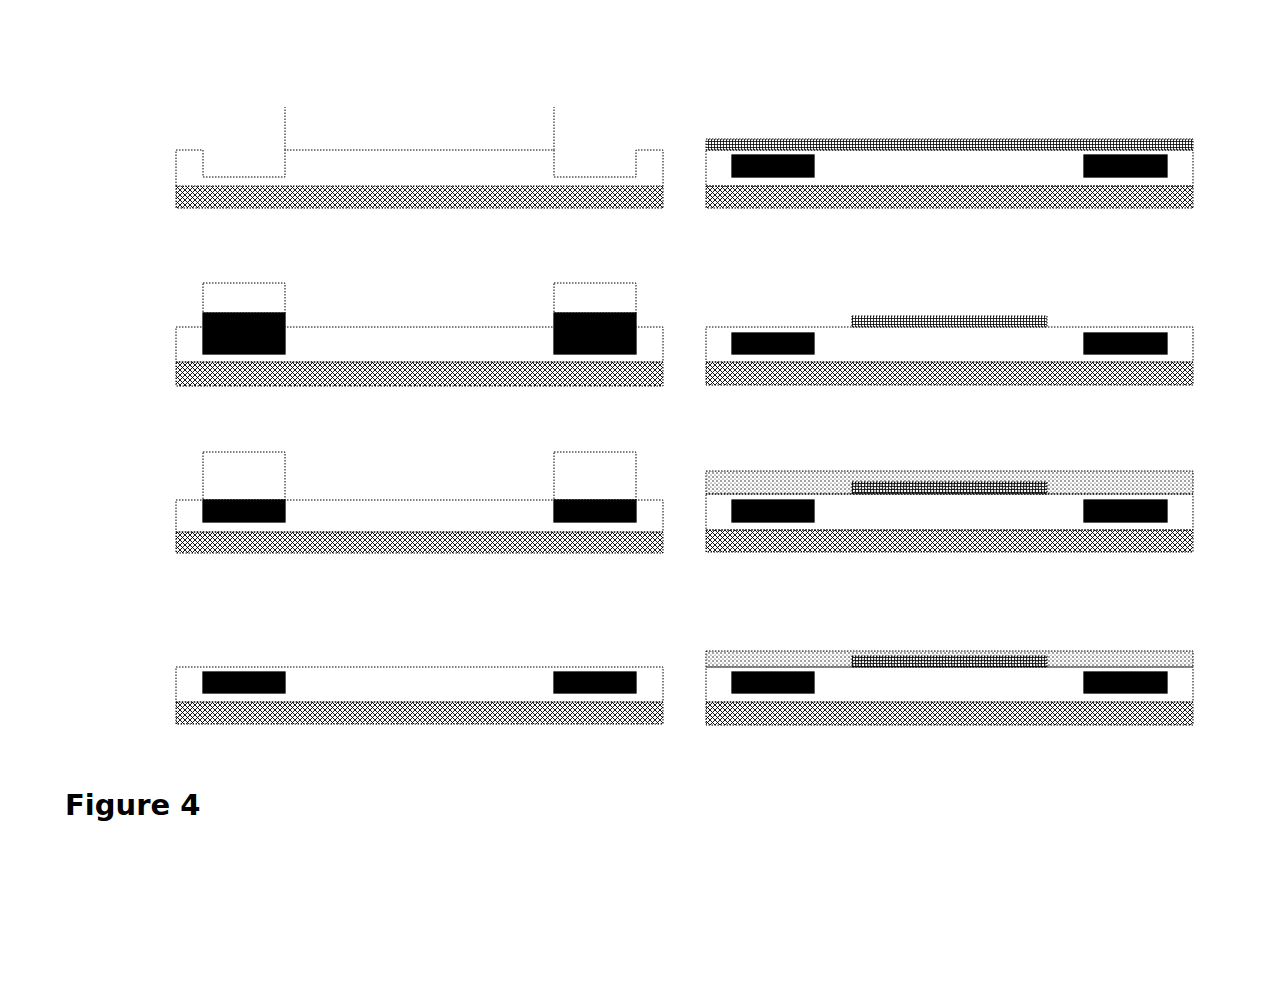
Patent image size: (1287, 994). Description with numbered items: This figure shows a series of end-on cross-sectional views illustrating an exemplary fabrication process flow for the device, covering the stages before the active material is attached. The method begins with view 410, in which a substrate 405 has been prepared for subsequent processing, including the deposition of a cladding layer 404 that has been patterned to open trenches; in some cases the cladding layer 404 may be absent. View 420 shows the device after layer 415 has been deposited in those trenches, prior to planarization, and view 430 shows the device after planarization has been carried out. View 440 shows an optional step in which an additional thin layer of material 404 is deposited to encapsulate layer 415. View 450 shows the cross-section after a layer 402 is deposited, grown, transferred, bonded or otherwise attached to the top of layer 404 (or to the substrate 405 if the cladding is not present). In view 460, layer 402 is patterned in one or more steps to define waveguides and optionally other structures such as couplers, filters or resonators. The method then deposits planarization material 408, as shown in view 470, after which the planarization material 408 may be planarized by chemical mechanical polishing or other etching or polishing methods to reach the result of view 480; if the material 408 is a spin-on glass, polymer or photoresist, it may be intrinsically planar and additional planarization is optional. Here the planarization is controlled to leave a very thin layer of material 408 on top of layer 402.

The layer 402 is at (856, 139).
The cladding layer 404 is at (410, 150).
The substrate 405 is at (500, 186).
The planarization material 408 is at (825, 471).
The layer 415 is at (265, 313).
The view 410 is at (183, 102).
The view 420 is at (183, 294).
The view 430 is at (183, 459).
The view 440 is at (183, 632).
The view 450 is at (1153, 96).
The view 460 is at (1153, 280).
The view 470 is at (1153, 455).
The view 480 is at (1153, 633).